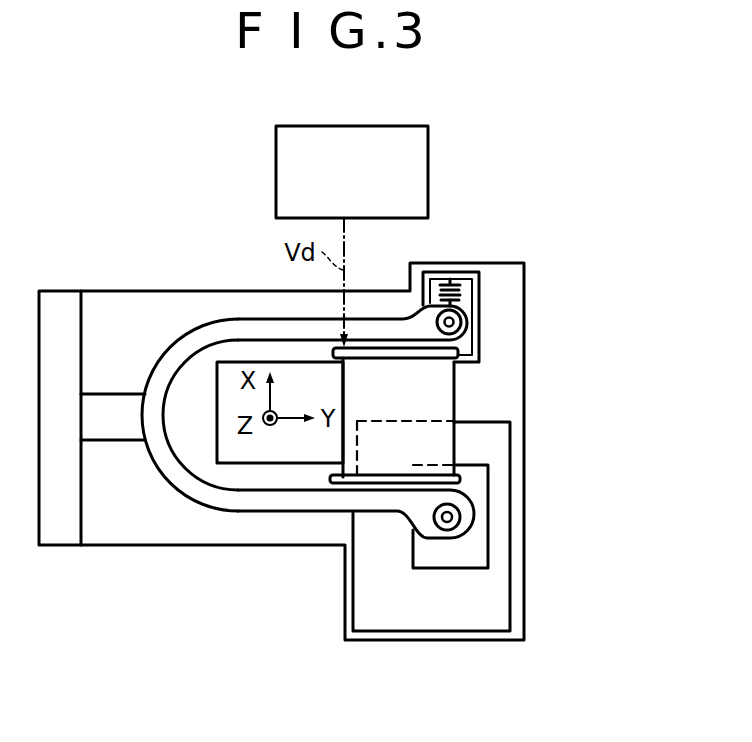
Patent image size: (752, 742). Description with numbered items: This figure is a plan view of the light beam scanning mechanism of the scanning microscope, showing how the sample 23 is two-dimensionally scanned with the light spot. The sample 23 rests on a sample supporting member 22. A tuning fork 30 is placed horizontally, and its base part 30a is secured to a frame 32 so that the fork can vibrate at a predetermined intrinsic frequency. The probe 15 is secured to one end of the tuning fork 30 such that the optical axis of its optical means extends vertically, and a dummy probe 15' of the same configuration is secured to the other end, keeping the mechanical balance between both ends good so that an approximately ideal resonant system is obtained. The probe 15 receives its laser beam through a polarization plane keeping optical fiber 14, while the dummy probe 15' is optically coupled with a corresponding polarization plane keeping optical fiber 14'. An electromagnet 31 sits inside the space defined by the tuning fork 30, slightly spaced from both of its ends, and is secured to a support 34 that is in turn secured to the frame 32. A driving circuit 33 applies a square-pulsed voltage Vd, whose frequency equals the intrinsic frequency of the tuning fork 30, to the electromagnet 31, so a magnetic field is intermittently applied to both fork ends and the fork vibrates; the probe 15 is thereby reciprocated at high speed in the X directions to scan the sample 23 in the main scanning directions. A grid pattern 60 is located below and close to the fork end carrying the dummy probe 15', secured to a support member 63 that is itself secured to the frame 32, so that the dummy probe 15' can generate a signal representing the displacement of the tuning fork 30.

The polarization plane keeping optical fiber 14 is at (426, 564).
The polarization plane keeping optical fiber 14' is at (509, 303).
The probe 15 is at (505, 494).
The dummy probe 15' is at (513, 330).
The sample supporting member 22 is at (490, 593).
The sample 23 is at (480, 536).
The tuning fork 30 is at (163, 315).
The base part 30a is at (110, 420).
The electromagnet 31 is at (447, 393).
The frame 32 is at (63, 306).
The driving circuit 33 is at (328, 186).
The support 34 is at (235, 452).
The grid pattern 60 is at (472, 271).
The support member 63 is at (478, 290).